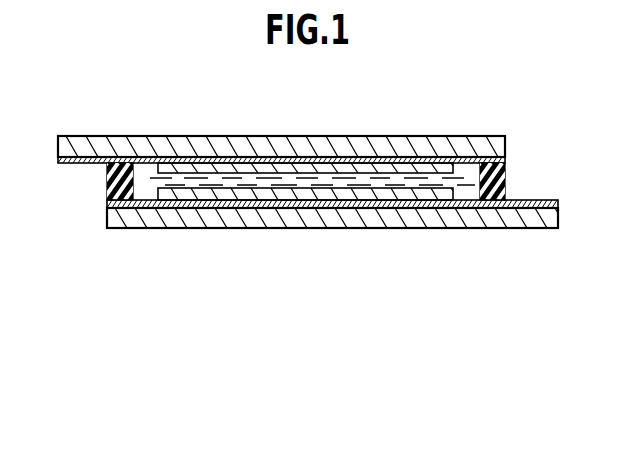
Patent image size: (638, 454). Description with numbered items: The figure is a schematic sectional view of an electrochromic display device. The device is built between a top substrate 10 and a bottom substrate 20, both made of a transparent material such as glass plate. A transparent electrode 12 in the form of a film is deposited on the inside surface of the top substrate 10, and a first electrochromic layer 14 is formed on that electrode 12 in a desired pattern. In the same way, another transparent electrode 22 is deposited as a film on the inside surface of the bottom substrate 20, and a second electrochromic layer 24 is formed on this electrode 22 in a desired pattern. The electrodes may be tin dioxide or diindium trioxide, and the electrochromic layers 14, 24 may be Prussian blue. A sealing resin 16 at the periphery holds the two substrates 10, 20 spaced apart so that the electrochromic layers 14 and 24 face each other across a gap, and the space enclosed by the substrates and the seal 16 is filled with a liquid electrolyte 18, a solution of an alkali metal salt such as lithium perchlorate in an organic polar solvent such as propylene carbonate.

The top substrate 10 is at (400, 136).
The transparent electrode 12 is at (80, 162).
The first electrochromic layer 14 is at (457, 170).
The sealing resin 16 is at (502, 172).
The liquid electrolyte 18 is at (158, 182).
The bottom substrate 20 is at (283, 220).
The transparent electrode 22 is at (540, 203).
The second electrochromic layer 24 is at (455, 195).